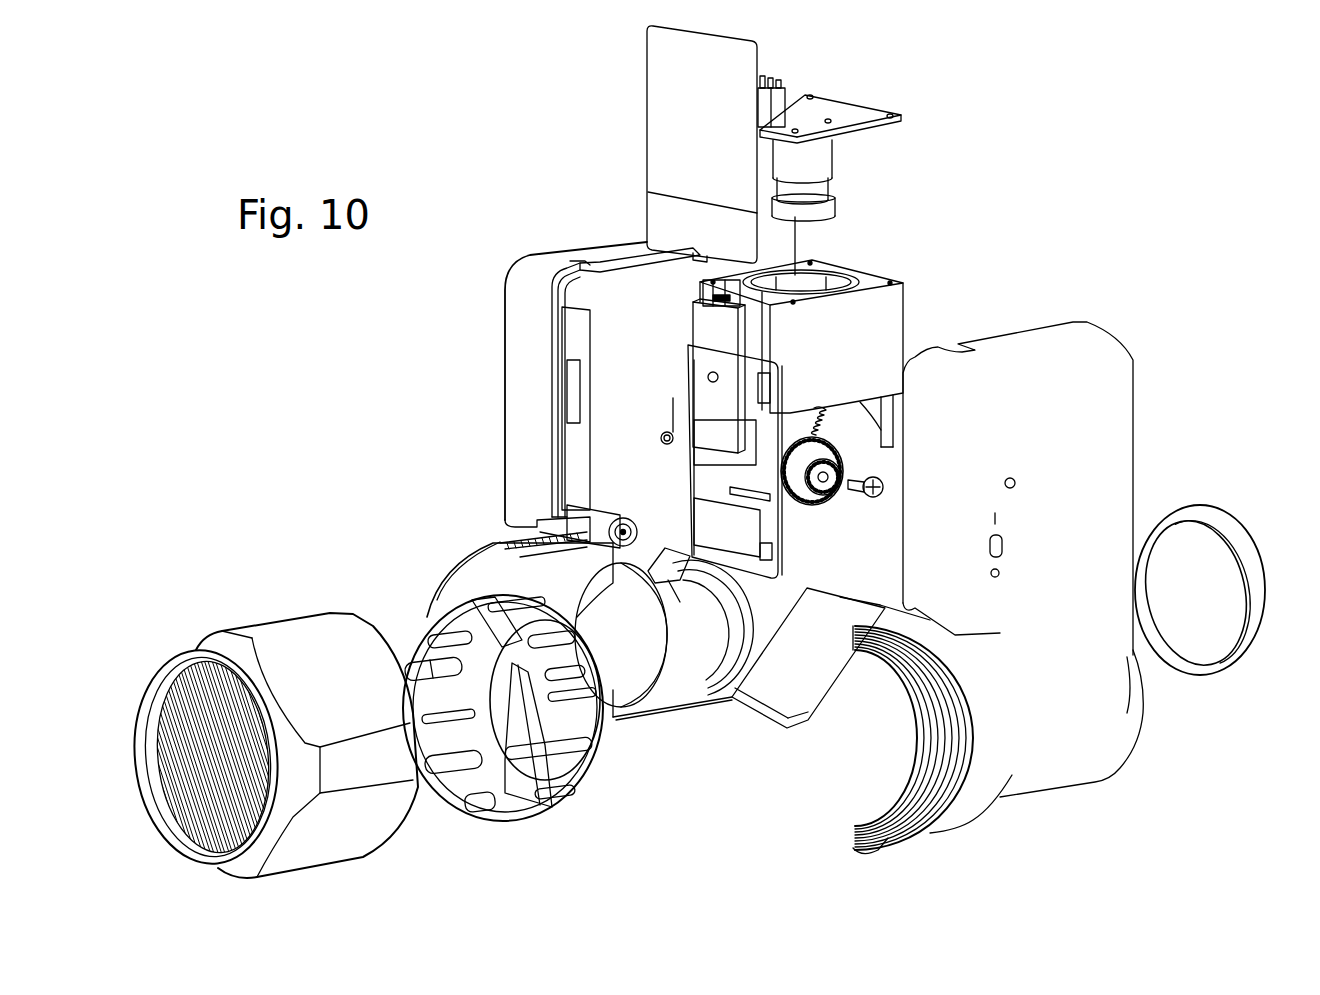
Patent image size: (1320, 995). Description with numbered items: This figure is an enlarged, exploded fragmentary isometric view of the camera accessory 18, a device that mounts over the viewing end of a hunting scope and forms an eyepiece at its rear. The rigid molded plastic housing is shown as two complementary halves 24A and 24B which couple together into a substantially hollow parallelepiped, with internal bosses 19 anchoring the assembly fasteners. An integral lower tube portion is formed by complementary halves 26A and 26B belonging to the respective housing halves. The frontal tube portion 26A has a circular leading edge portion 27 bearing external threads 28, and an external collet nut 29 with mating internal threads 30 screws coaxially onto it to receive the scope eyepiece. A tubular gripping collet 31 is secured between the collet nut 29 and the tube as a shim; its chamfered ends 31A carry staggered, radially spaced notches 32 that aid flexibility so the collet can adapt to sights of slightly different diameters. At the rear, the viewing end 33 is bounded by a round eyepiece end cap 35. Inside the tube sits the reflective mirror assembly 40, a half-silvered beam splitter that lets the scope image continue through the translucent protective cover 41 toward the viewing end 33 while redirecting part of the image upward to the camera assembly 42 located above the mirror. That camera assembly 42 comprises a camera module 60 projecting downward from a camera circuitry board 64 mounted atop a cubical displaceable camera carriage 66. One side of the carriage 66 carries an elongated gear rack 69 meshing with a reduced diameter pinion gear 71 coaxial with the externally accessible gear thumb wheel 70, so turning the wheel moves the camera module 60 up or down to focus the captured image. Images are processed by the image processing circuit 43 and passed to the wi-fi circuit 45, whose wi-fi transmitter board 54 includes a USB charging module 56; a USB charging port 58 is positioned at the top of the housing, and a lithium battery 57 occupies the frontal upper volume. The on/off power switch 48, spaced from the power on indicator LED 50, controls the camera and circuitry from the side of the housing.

The camera accessory 18 is at (309, 490).
The internal bosses 19 is at (608, 514).
The housing half 24A is at (1088, 350).
The housing half 24B is at (520, 275).
The frontal tube portion 26A is at (972, 815).
The tube portion half 26B is at (480, 578).
The circular leading edge portion 27 is at (914, 795).
The external threads 28 is at (500, 537).
The collet nut 29 is at (282, 610).
The internal threads 30 is at (200, 710).
The gripping collet 31 is at (536, 834).
The chamfered ends 31A is at (505, 805).
The notches 32 is at (575, 695).
The viewing end 33 is at (1138, 770).
The eyepiece end cap 35 is at (1247, 576).
The reflective mirror assembly 40 is at (771, 735).
The translucent protective cover 41 is at (645, 655).
The camera assembly 42 is at (855, 197).
The image processing circuit 43 is at (789, 78).
The wi-fi circuit 45 is at (729, 582).
The on/off power switch 48 is at (1002, 545).
The power on indicator LED 50 is at (1016, 479).
The wi-fi transmitter board 54 is at (697, 485).
The USB charging module 56 is at (706, 370).
The lithium battery 57 is at (657, 133).
The USB charging port 58 is at (742, 312).
The camera module 60 is at (820, 160).
The camera circuitry board 64 is at (846, 114).
The camera carriage 66 is at (890, 325).
The gear rack 69 is at (828, 428).
The gear thumb wheel 70 is at (820, 490).
The pinion gear 71 is at (852, 490).